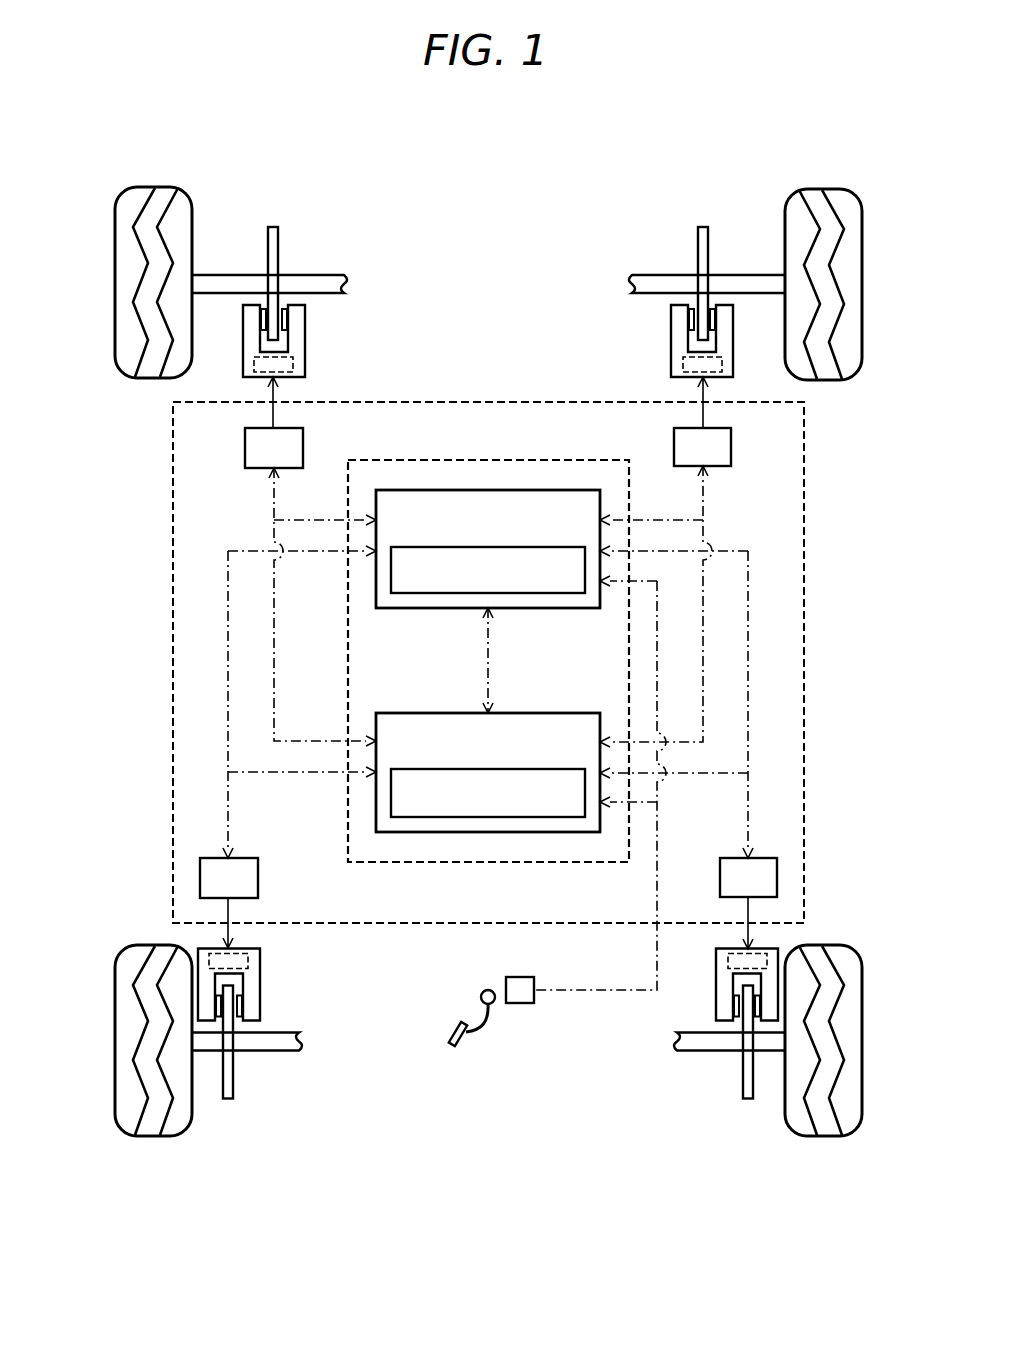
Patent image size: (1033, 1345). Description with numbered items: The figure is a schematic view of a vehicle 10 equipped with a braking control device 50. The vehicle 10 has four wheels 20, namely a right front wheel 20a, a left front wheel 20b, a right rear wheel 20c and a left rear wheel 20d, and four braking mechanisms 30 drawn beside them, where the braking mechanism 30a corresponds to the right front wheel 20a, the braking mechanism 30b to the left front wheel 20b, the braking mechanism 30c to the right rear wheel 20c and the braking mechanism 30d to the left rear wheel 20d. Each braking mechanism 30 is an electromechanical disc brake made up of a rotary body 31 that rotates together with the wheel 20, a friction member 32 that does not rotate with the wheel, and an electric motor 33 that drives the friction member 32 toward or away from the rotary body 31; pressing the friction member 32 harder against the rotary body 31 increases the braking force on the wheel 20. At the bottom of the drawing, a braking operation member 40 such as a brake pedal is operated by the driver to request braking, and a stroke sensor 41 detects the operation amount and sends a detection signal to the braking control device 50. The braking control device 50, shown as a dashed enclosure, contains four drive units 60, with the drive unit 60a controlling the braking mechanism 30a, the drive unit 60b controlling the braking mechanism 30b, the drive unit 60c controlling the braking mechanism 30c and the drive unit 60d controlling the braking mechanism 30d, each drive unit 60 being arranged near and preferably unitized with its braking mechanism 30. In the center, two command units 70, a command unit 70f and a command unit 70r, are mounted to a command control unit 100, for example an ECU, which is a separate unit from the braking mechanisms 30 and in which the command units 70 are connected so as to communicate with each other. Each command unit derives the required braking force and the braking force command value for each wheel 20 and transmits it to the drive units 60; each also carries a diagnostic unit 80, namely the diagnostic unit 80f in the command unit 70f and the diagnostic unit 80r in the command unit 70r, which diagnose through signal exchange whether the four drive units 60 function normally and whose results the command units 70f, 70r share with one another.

The vehicle 10 is at (96, 171).
The wheels 20 is at (513, 663).
The right front wheel 20a is at (825, 188).
The left front wheel 20b is at (154, 186).
The right rear wheel 20c is at (822, 1137).
The left rear wheel 20d is at (155, 1137).
The braking mechanisms 30 is at (488, 651).
The braking mechanism for right front wheel 30a is at (671, 229).
The braking mechanism for left front wheel 30b is at (316, 238).
The braking mechanism for right rear wheel 30c is at (672, 1096).
The braking mechanism for left rear wheel 30d is at (314, 1088).
The rotary body 31 is at (703, 226).
The friction member 32 is at (710, 334).
The electric motor 33 is at (722, 368).
The braking operation member 40 is at (450, 1031).
The stroke sensor 41 is at (520, 1003).
The braking control device 50 is at (806, 545).
The drive units 60 is at (489, 666).
The drive unit for braking mechanism 30a 60a is at (731, 445).
The drive unit for braking mechanism 30b 60b is at (245, 445).
The drive unit for braking mechanism 30c 60c is at (777, 878).
The drive unit for braking mechanism 30d 60d is at (200, 878).
The command units 70 is at (493, 662).
The front command unit 70f is at (521, 484).
The rear command unit 70r is at (521, 707).
The diagnostic units 80 is at (493, 662).
The diagnostic unit of command unit 70f 80f is at (417, 595).
The diagnostic unit of command unit 70r 80r is at (423, 817).
The command control unit 100 is at (451, 456).